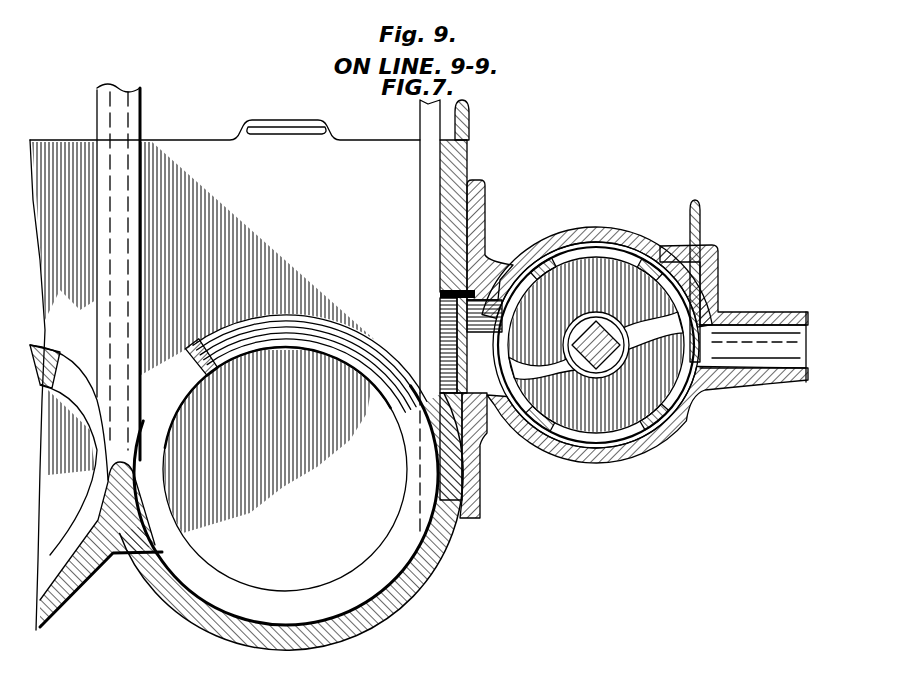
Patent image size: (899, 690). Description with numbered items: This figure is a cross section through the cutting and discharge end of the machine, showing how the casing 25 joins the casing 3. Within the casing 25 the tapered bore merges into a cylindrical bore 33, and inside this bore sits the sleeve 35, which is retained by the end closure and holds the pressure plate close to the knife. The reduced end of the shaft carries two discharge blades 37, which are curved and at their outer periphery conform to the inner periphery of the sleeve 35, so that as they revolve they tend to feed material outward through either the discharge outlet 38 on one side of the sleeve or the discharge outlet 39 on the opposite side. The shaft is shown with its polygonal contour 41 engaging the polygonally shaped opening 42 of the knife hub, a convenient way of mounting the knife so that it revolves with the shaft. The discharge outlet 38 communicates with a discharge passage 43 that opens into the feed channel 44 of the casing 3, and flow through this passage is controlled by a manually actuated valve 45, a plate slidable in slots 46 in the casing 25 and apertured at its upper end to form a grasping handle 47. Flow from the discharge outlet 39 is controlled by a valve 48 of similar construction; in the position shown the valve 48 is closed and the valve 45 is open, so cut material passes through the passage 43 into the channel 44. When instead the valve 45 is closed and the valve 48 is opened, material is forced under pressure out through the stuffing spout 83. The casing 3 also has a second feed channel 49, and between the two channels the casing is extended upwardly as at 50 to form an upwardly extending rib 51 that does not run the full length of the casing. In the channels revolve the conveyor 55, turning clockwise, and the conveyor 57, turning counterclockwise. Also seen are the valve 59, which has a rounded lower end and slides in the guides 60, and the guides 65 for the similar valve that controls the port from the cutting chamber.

The casing 3 is at (447, 540).
The casing 25 is at (630, 448).
The cylindrical bore 33 is at (565, 447).
The sleeve 35 is at (668, 418).
The discharge blades 37 is at (596, 347).
The discharge outlet 38 is at (460, 410).
The discharge outlet 39 is at (680, 388).
The polygonal contour 41 is at (580, 340).
The polygonally shaped opening 42 is at (600, 325).
The discharge passage 43 is at (447, 370).
The feed channel 44 is at (258, 337).
The manually actuated valve 45 is at (470, 166).
The slots 46 is at (488, 228).
The grasping handle 47 is at (470, 118).
The valve 48 is at (700, 242).
The feed channel 49 is at (64, 231).
The upward extension 50 is at (130, 545).
The upwardly extending rib 51 is at (120, 497).
The conveyor 55 is at (276, 604).
The conveyor 57 is at (62, 378).
The valve 59 is at (262, 120).
The guides 60 is at (142, 140).
The guides 65 is at (97, 124).
The stuffing spout 83 is at (748, 312).